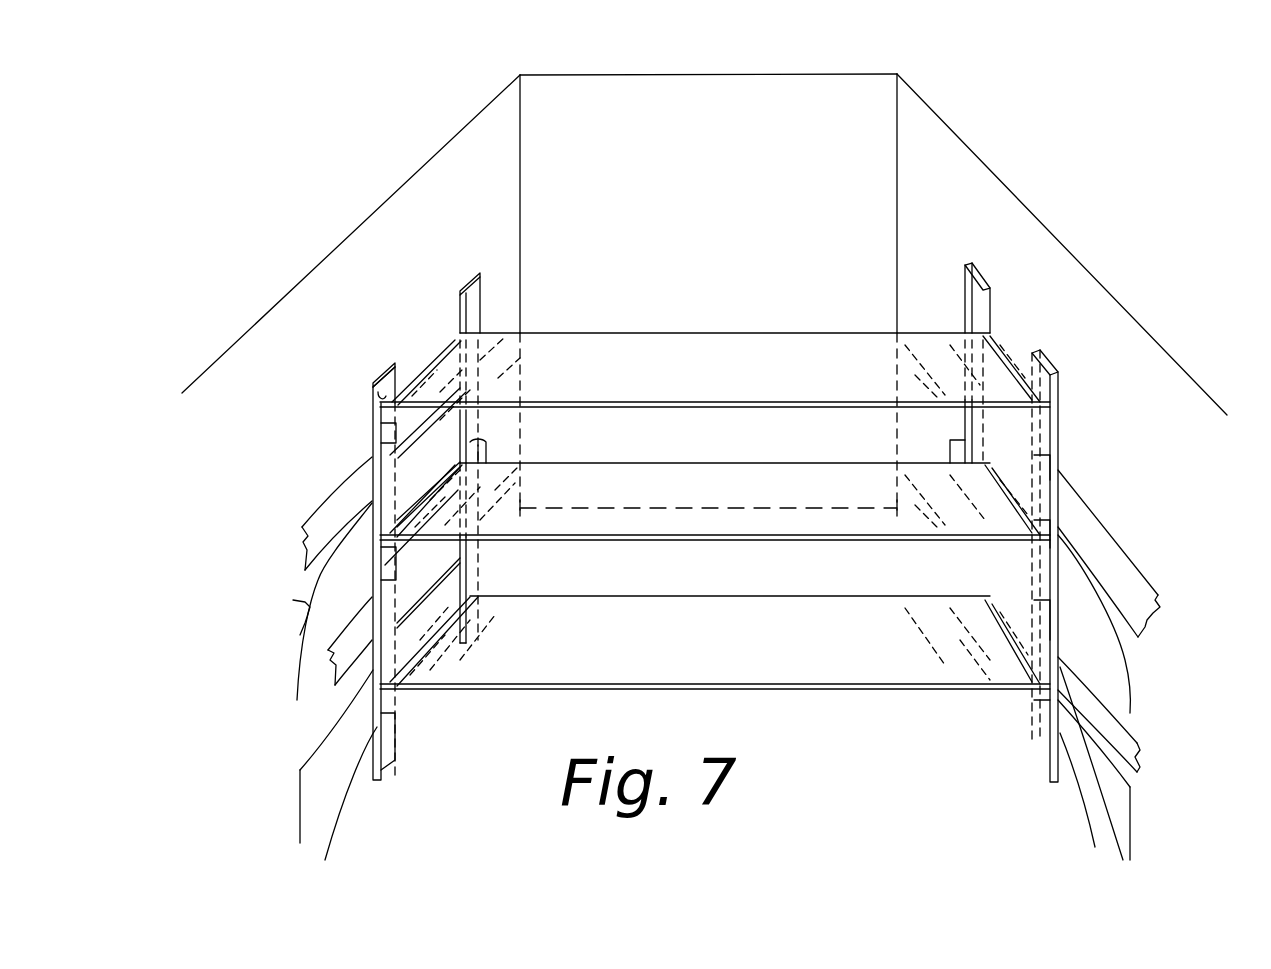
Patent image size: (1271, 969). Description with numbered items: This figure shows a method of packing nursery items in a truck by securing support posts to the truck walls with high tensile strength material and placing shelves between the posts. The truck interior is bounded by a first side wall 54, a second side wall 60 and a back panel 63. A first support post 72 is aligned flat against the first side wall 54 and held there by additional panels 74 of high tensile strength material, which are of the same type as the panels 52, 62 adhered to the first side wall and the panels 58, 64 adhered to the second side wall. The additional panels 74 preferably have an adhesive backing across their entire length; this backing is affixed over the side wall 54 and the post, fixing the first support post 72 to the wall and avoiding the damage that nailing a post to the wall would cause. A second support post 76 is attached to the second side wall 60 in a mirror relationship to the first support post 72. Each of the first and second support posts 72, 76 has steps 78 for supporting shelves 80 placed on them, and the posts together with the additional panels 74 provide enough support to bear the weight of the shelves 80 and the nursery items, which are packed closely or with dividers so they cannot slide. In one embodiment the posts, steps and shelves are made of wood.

The panel 52 is at (1123, 675).
The first side wall 54 is at (1097, 305).
The panel 58 is at (293, 600).
The second side wall 60 is at (415, 205).
The panel 62 is at (1120, 812).
The back panel 63 is at (716, 100).
The panel 64 is at (317, 758).
The first support post 72 is at (1058, 398).
The additional panels 74 is at (1095, 535).
The second support post 76 is at (372, 423).
The steps 78 is at (442, 362).
The shelves 80 is at (708, 372).